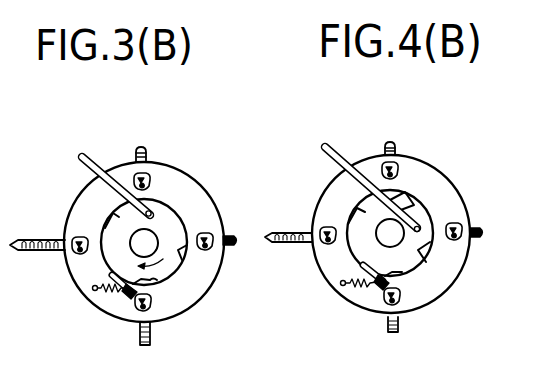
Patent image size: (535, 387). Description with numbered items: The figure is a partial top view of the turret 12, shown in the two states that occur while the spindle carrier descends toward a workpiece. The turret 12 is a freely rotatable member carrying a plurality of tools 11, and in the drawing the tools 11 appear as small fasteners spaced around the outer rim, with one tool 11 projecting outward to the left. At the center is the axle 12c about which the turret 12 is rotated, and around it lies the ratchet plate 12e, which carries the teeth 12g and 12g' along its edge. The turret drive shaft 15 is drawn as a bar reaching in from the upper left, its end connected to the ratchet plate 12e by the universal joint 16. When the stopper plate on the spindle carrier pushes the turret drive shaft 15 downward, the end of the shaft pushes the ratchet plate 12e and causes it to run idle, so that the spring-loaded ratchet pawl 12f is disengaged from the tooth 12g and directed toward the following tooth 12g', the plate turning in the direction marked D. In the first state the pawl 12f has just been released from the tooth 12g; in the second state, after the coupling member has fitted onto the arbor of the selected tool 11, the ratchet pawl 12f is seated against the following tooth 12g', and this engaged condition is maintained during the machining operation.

In FIG. 3B, the tool 11 is at (147, 152).
In FIG. 4B, the tool 11 is at (396, 150).
In FIG. 3B, the turret 12 is at (180, 159).
In FIG. 4B, the turret 12 is at (391, 234).
In FIG. 3B, the axle 12c is at (172, 207).
In FIG. 4B, the axle 12c is at (390, 233).
In FIG. 3B, the ratchet plate 12e is at (178, 230).
In FIG. 4B, the ratchet plate 12e is at (390, 233).
In FIG. 3B, the ratchet pawl 12f is at (112, 276).
In FIG. 4B, the ratchet pawl 12f is at (363, 270).
In FIG. 3B, the tooth 12g is at (108, 215).
In FIG. 4B, the tooth 12g is at (324, 193).
In FIG. 3B, the following tooth 12g' is at (182, 311).
In FIG. 4B, the following tooth 12g' is at (437, 301).
In FIG. 3B, the turret drive shaft 15 is at (97, 162).
In FIG. 4B, the turret drive shaft 15 is at (337, 152).
In FIG. 3B, the universal joint 16 is at (153, 237).
In FIG. 3B, the rotation direction D is at (71, 153).